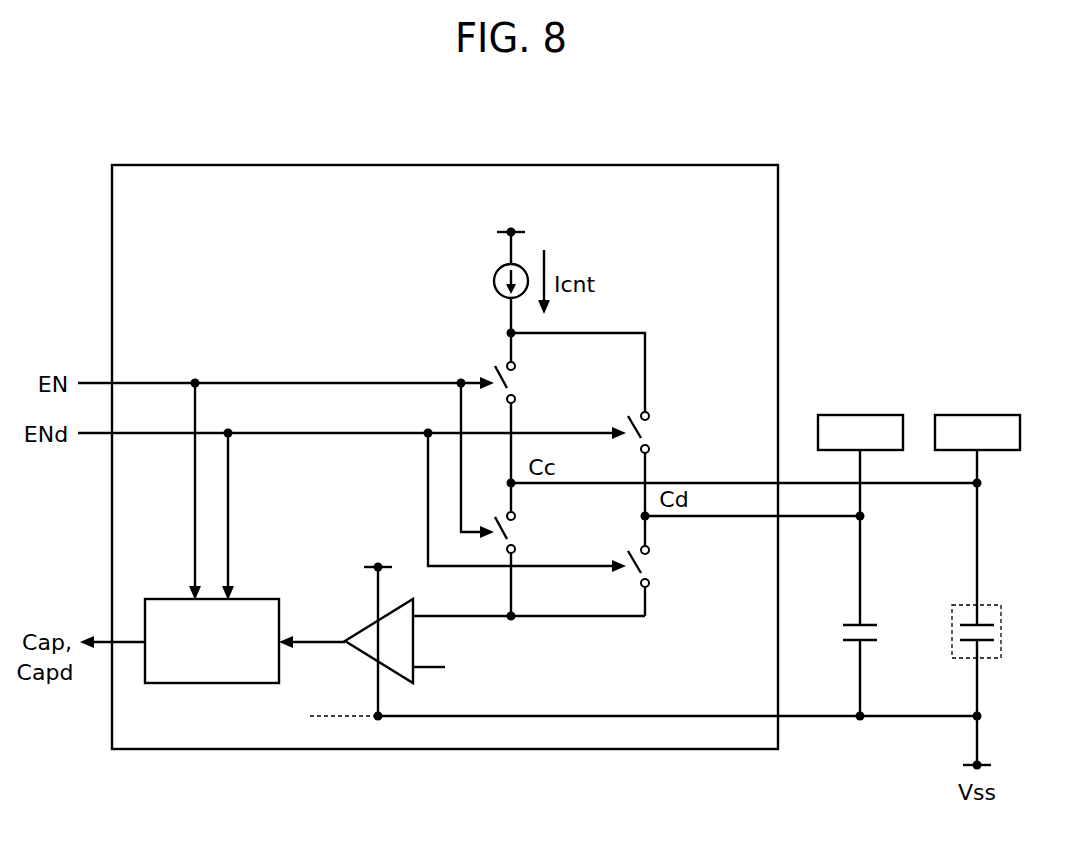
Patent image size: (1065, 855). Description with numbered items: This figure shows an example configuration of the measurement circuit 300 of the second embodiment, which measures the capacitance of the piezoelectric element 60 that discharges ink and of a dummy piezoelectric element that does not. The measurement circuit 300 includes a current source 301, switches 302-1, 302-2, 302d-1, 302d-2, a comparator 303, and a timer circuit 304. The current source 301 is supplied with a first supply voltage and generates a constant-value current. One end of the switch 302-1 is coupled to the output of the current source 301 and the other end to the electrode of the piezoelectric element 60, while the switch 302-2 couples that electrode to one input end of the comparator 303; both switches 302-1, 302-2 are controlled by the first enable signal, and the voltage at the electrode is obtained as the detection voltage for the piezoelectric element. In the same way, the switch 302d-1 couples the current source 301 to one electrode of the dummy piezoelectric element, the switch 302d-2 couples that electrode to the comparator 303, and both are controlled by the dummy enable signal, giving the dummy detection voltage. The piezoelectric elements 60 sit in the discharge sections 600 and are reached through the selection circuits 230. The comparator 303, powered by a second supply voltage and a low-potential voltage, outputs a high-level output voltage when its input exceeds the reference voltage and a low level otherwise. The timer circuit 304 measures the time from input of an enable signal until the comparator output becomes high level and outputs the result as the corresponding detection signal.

The measurement circuit 300 is at (148, 163).
The current source 301 is at (493, 273).
The switch 302-1 is at (512, 387).
The switch 302-2 is at (512, 537).
The switch 302d-1 is at (646, 436).
The switch 302d-2 is at (646, 570).
The comparator 303 is at (359, 637).
The timer circuit 304 is at (164, 598).
The selection circuit 230 is at (848, 413).
The piezoelectric element 60 is at (875, 645).
The discharge section 600 is at (996, 602).